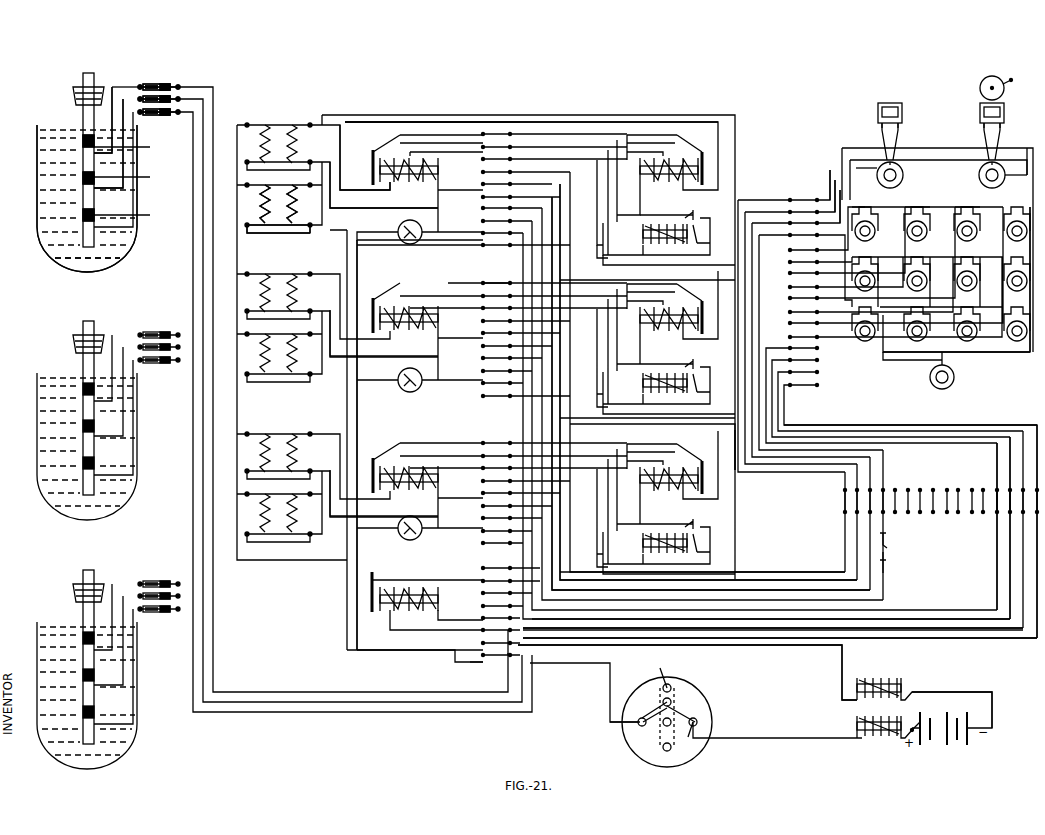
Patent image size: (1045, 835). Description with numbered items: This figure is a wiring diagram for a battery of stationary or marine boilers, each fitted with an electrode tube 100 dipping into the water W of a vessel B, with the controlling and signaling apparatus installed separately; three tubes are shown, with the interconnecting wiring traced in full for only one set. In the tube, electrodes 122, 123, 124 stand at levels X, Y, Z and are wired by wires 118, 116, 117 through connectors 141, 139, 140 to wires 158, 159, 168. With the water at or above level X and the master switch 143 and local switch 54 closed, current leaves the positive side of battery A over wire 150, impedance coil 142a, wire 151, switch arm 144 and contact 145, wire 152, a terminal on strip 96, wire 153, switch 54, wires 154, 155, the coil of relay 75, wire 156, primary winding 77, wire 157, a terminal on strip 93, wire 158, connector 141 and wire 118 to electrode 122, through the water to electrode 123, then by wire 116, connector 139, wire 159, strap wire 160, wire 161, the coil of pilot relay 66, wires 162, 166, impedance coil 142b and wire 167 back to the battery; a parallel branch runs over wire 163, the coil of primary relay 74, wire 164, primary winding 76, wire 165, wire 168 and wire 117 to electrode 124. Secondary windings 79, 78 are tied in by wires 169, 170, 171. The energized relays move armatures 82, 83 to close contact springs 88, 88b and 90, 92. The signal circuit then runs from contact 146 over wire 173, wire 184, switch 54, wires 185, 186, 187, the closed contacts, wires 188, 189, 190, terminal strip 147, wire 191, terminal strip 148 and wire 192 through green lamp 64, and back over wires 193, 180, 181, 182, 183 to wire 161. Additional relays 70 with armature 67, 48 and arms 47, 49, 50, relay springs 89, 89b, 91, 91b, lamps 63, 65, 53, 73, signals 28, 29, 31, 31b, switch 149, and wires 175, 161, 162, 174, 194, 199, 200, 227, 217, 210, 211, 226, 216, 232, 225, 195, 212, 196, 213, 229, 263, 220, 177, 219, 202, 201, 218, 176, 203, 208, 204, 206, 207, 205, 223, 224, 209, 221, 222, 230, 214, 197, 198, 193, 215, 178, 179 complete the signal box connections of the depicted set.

The electrode rod 100 is at (82, 136).
The vessel B is at (87, 206).
The water W is at (87, 250).
The electrode 122 is at (83, 165).
The electrode 123 is at (83, 200).
The electrode 124 is at (83, 235).
The level X is at (127, 147).
The contact lead Y is at (127, 178).
The contact lead Z is at (127, 215).
The wire 116 is at (136, 162).
The wire 117 is at (138, 195).
The wire 118 is at (117, 85).
The connector 141 is at (160, 84).
The connector 139 is at (172, 95).
The connector 140 is at (172, 112).
The wire 159 is at (213, 99).
The wire 168 is at (192, 234).
The wire 170 is at (238, 124).
The secondary winding 79 is at (257, 144).
The primary winding 77 is at (297, 144).
The wire 192 is at (955, 214).
The wire 169 is at (296, 197).
The secondary winding 78 is at (257, 204).
The primary winding 76 is at (297, 204).
The wire 171 is at (296, 234).
The wire 156 is at (320, 117).
The wire 164 is at (592, 120).
The wire 188 is at (535, 120).
The wire 189 is at (470, 122).
The armature 83 is at (394, 170).
The relay armature 91b is at (372, 152).
The relay contact arm 91 is at (388, 142).
The contact spring 90 is at (400, 136).
The contact spring 92 is at (422, 142).
The relay 75 is at (378, 162).
The wire 165 is at (332, 210).
The wire 157 is at (436, 200).
The wire 155 is at (460, 192).
The local switch 54 is at (410, 237).
The wire 154 is at (465, 231).
The wire 185 is at (422, 236).
The conductor 200 is at (483, 247).
The wire 184 is at (347, 249).
The wire 153 is at (358, 246).
The conductor 194 is at (541, 157).
The conductor 199 is at (512, 170).
The terminal strip 93 is at (521, 190).
The conductor 227 is at (884, 604).
The wire 158 is at (528, 208).
The conductor 217 is at (483, 249).
The primary relay 74 is at (669, 179).
The armature 82 is at (705, 178).
The relay contact arm 89 is at (695, 143).
The contact spring 88 is at (667, 127).
The contact spring 88b is at (672, 141).
The relay contact 89b is at (690, 153).
The wire 187 is at (625, 140).
The conductor 210 is at (615, 150).
The conductor 211 is at (606, 165).
The conductor 226 is at (589, 202).
The conductor 216 is at (632, 198).
The wire 163 is at (666, 206).
The switch contact 50 is at (691, 208).
The switch contact 49 is at (705, 216).
The relay coil 48 is at (665, 237).
The conductor 232 is at (637, 243).
The switch arm 47 is at (700, 244).
The wire 186 is at (607, 250).
The conductor 225 is at (630, 258).
The wire 190 is at (560, 136).
The conductor 195 is at (552, 154).
The conductor 212 is at (548, 168).
The relay coil 70 is at (376, 601).
The relay armature 67 is at (376, 587).
The conductor 175 is at (455, 588).
The wire 161 is at (470, 617).
The pilot relay 66 is at (436, 620).
The wire 162 is at (436, 628).
The conductor 174 is at (438, 658).
The strap wire 160 is at (478, 660).
The terminal strip 96 is at (497, 650).
The wire 191 is at (780, 477).
The conductor 196 is at (852, 475).
The conductor 213 is at (873, 480).
The conductor 229 is at (880, 463).
The conductor 263 is at (800, 350).
The conductor 220 is at (805, 362).
The wire 181 is at (862, 378).
The wire 182 is at (784, 421).
The conductor 177 is at (993, 432).
The conductor 219 is at (1010, 452).
The conductor 202 is at (997, 468).
The conductor 201 is at (995, 565).
The conductor 218 is at (1008, 583).
The switch 149 is at (886, 567).
The terminal strip 147 is at (941, 509).
The conductor 176 is at (955, 633).
The wire 183 is at (1015, 640).
The terminal strip 148 is at (790, 298).
The conductor 203 is at (840, 148).
The conductor 208 is at (940, 159).
The conductor 204 is at (880, 160).
The signal lamp 28 is at (879, 175).
The signal lamp 29 is at (984, 175).
The indicator 31b is at (877, 110).
The indicator 31 is at (986, 118).
The conductor 206 is at (880, 130).
The conductor 207 is at (899, 150).
The conductor 205 is at (900, 172).
The conductor 223 is at (984, 130).
The conductor 224 is at (1001, 145).
The conductor 209 is at (1014, 252).
The conductor 221 is at (983, 165).
The conductor 222 is at (1016, 165).
The conductor 230 is at (832, 190).
The conductor 214 is at (836, 195).
The conductor 197 is at (843, 205).
The lamp socket 63 is at (876, 224).
The green signal lamp 64 is at (928, 232).
The lamp socket 65 is at (978, 231).
The lamp socket 53 is at (1017, 227).
The conductor 198 is at (885, 224).
The wire 193 is at (932, 218).
The conductor 215 is at (976, 204).
The wire 180 is at (956, 347).
The conductor 178 is at (912, 361).
The conductor 179 is at (950, 358).
The lamp 73 is at (942, 385).
The wire 173 is at (648, 672).
The master switch 143 is at (667, 730).
The contact 146 is at (670, 686).
The contact 145 is at (671, 701).
The switch arm 144 is at (660, 726).
The wire 152 is at (608, 716).
The wire 151 is at (796, 735).
The wire 166 is at (828, 650).
The impedance coil 142b is at (924, 690).
The impedance coil 142a is at (883, 737).
The wire 150 is at (905, 722).
The battery A is at (941, 742).
The wire 167 is at (960, 692).